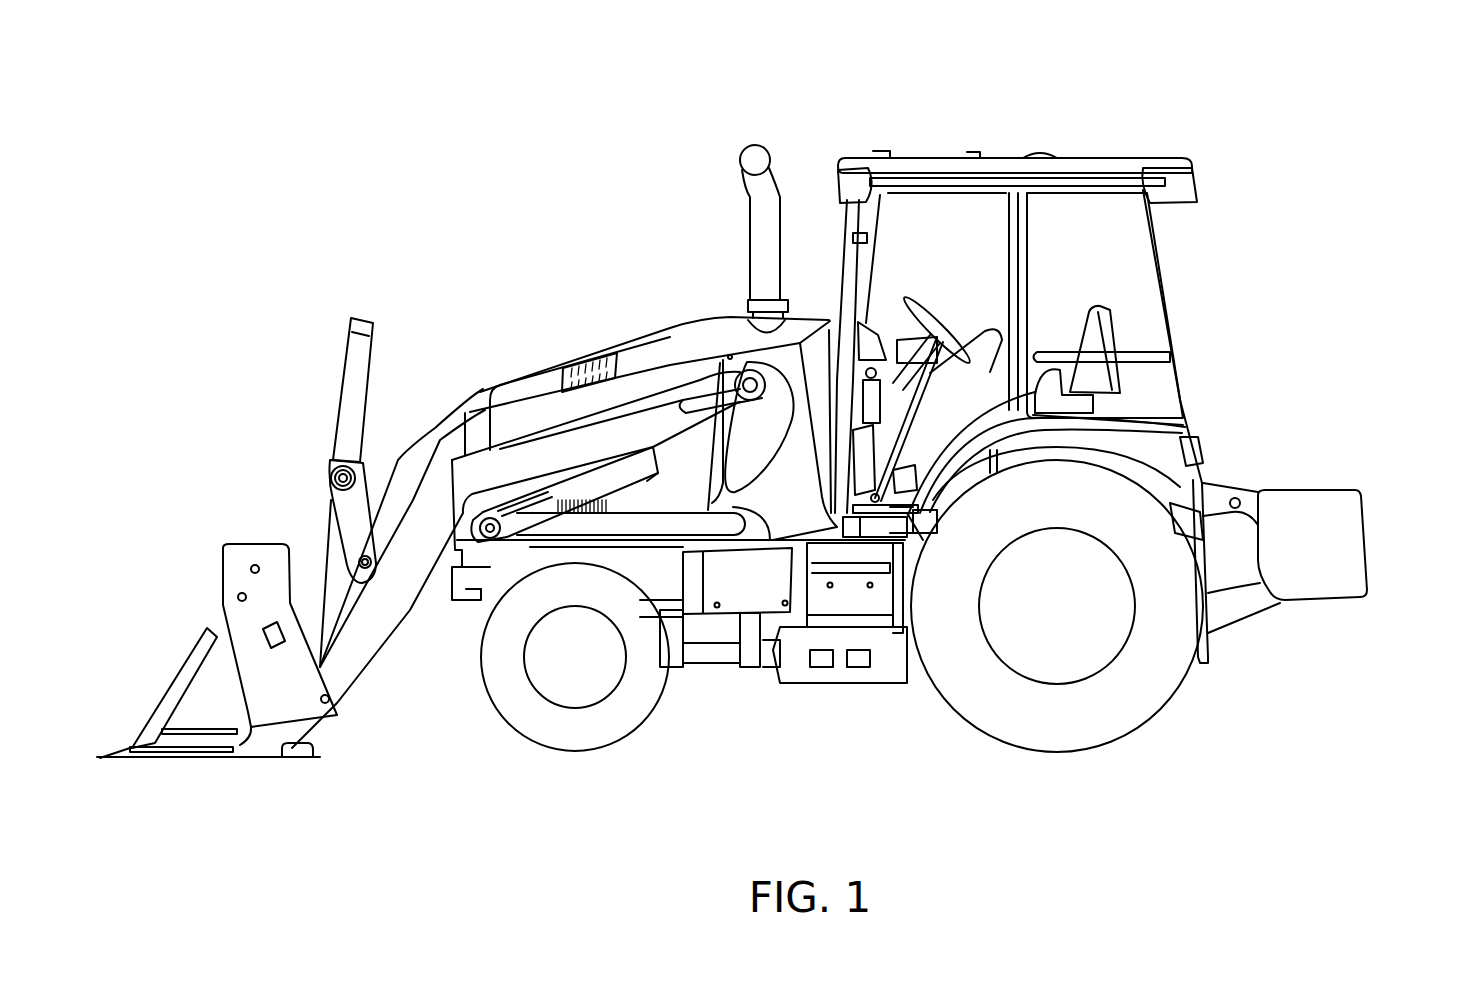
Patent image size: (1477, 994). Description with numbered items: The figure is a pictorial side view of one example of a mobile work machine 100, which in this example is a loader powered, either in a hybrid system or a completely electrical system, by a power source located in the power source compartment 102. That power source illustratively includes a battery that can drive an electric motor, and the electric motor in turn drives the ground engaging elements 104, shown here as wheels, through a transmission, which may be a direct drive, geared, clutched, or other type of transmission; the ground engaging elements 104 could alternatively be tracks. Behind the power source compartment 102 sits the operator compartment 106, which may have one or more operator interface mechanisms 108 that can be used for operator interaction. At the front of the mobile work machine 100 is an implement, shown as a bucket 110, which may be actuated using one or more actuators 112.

The mobile work machine 100 is at (1347, 97).
The power source compartment 102 is at (593, 349).
The ground engaging elements 104 is at (622, 742).
The operator compartment 106 is at (943, 229).
The operator interface mechanisms 108 is at (932, 310).
The bucket 110 is at (228, 571).
The actuators 112 is at (543, 527).